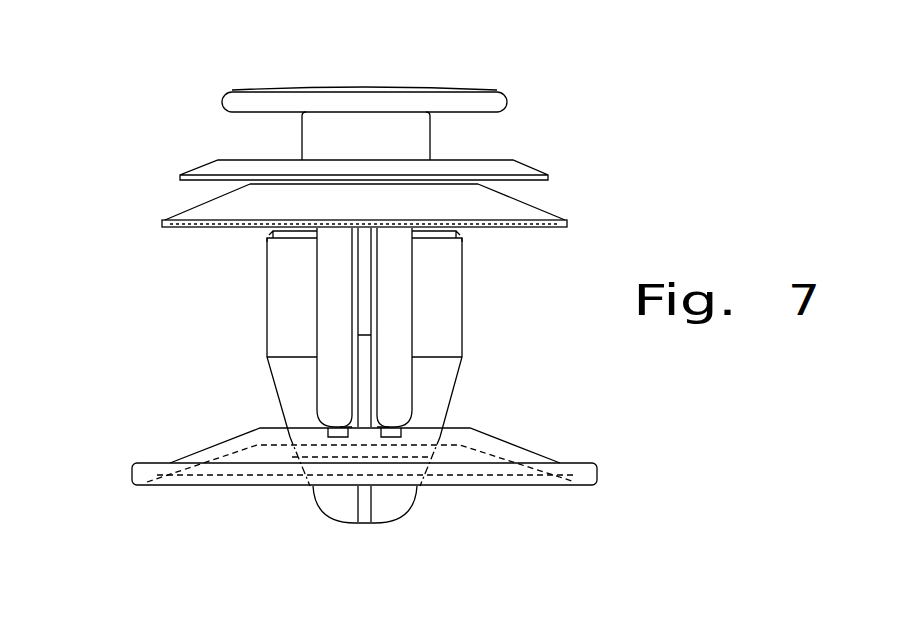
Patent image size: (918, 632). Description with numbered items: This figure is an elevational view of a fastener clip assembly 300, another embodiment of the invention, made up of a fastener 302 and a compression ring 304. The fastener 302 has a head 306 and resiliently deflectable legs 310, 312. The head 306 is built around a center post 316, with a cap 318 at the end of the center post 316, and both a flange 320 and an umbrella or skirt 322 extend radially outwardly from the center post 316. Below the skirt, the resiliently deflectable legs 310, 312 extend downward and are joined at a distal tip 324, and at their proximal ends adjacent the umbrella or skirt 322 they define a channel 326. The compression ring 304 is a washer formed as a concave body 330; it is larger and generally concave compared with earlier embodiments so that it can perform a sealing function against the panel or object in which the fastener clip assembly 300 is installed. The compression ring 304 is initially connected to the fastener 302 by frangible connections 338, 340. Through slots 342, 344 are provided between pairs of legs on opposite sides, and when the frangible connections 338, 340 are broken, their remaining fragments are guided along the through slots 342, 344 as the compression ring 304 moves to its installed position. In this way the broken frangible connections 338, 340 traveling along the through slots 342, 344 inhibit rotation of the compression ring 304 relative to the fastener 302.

The fastener clip assembly 300 is at (162, 114).
The fastener 302 is at (363, 60).
The compression ring 304 is at (562, 434).
The head 306 is at (528, 140).
The resiliently deflectable leg 310 is at (277, 290).
The resiliently deflectable leg 312 is at (448, 295).
The center post 316 is at (310, 140).
The cap 318 is at (250, 100).
The flange 320 is at (200, 168).
The umbrella or skirt 322 is at (185, 216).
The distal tip 324 is at (360, 528).
The channel 326 is at (455, 230).
The concave body 330 is at (498, 443).
The frangible connection 338 is at (337, 423).
The frangible connection 340 is at (390, 422).
The through slot 342 is at (335, 358).
The through slot 344 is at (397, 343).